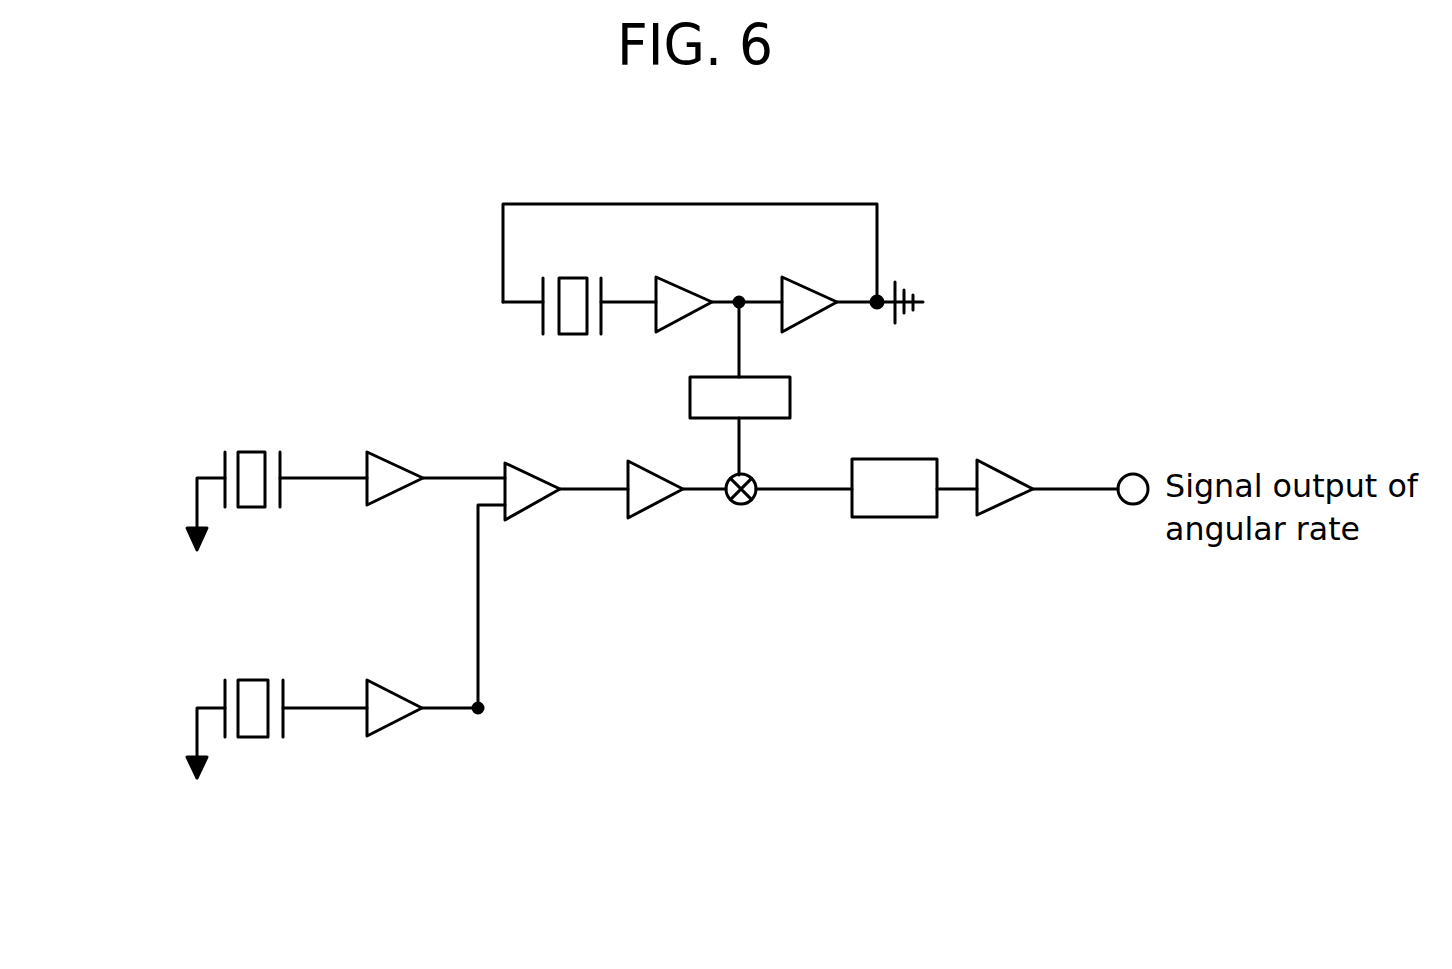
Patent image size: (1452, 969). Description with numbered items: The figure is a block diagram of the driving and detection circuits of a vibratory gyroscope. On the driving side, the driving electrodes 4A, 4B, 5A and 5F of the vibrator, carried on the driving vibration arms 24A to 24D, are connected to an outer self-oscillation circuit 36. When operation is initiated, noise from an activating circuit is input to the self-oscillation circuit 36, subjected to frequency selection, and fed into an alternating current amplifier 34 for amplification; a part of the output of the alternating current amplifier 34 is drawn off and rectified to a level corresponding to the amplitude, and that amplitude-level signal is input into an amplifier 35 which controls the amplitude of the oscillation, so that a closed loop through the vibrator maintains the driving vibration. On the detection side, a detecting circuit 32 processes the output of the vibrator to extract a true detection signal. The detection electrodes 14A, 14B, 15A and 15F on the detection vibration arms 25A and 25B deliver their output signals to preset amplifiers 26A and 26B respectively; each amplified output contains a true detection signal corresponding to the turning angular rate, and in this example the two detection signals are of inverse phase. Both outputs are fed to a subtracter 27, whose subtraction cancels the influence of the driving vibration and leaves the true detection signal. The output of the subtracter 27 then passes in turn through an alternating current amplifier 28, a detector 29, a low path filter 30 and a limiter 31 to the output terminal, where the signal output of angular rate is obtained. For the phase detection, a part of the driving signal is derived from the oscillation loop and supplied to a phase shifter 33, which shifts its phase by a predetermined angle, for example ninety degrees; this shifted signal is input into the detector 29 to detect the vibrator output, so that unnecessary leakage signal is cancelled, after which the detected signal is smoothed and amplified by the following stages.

The self-oscillation circuit 36 is at (877, 185).
The driving electrode 4A is at (451, 257).
The driving electrode 4B is at (451, 257).
The driving electrode 5A is at (451, 257).
The driving electrode 5F is at (543, 292).
The driving vibration arm 24A is at (575, 342).
The driving vibration arm 24D is at (568, 320).
The alternating current amplifier 34 is at (667, 289).
The amplifier 35 is at (795, 291).
The phase shifter 33 is at (790, 391).
The detecting circuit 32 is at (1120, 748).
The detecting electrode 14A is at (243, 452).
The detecting electrode 14B is at (243, 452).
The detection electrode 15A is at (243, 452).
The detection electrode 15F is at (223, 462).
The detection vibration arm 25A is at (258, 456).
The detection vibration arm 25B is at (248, 687).
The preset amplifier 26A is at (385, 464).
The preset amplifier 26B is at (378, 692).
The subtracter 27 is at (528, 500).
The alternating current amplifier 28 is at (650, 500).
The detector 29 is at (760, 500).
The low path filter 30 is at (895, 517).
The limiter 31 is at (1002, 495).